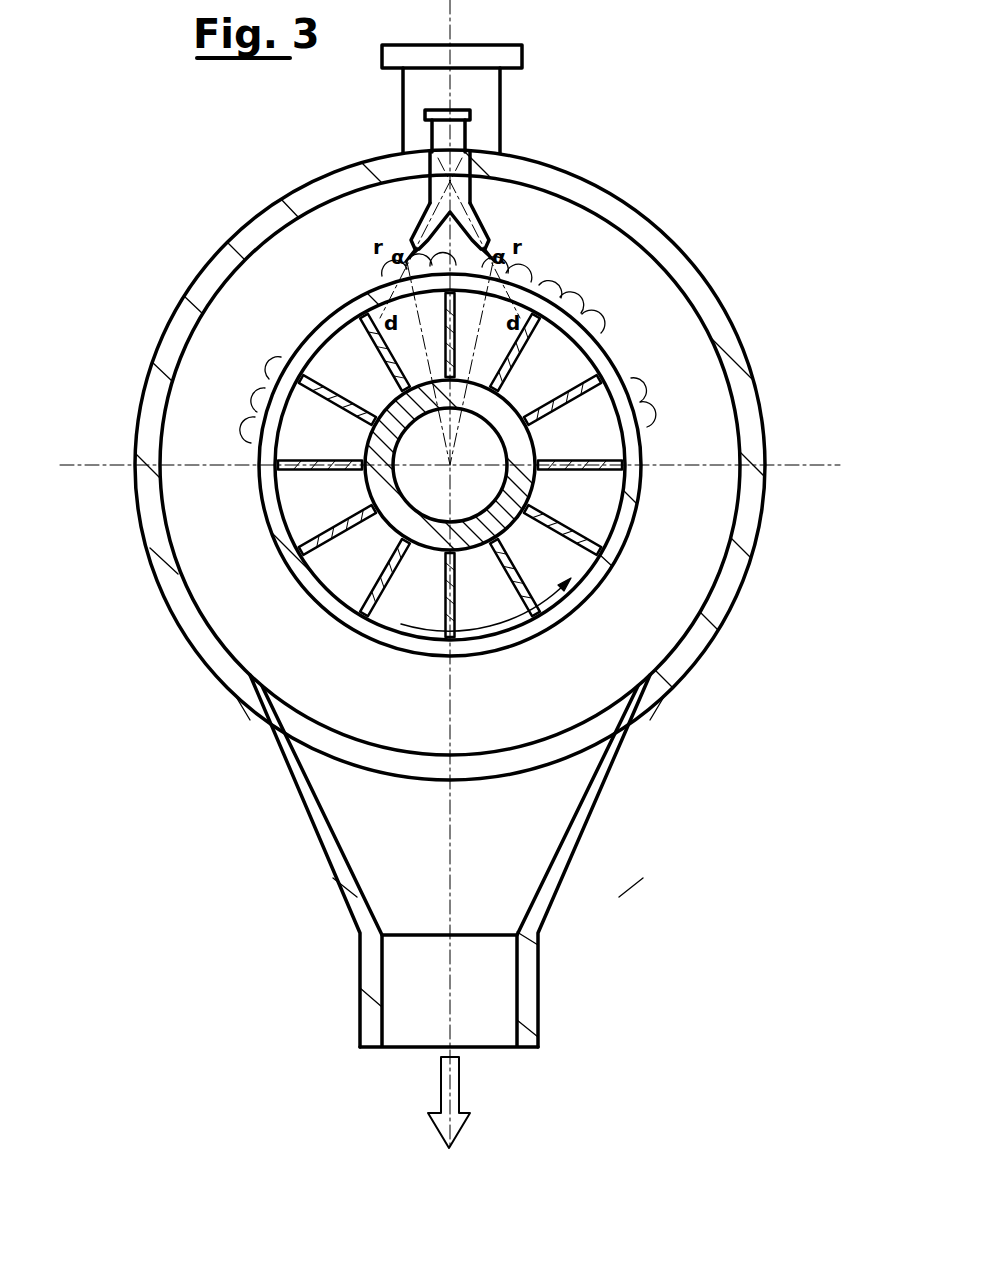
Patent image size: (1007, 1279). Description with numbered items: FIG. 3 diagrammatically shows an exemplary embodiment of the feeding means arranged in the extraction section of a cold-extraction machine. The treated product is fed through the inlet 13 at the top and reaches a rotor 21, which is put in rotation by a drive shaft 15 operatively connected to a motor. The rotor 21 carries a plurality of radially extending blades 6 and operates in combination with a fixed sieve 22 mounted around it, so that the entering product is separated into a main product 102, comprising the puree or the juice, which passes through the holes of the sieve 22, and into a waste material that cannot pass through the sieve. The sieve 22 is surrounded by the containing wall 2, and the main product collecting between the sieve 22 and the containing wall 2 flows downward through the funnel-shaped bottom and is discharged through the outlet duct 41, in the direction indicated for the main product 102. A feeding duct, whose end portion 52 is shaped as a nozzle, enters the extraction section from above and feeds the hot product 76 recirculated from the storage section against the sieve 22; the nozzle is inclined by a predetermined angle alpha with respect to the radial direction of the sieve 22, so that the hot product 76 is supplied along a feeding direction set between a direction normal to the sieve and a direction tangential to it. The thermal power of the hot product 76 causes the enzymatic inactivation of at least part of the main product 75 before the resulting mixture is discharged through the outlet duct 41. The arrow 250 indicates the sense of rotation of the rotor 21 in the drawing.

The containing wall 2 is at (200, 285).
The blades 6 is at (283, 463).
The inlet 13 is at (513, 57).
The drive shaft 15 is at (493, 462).
The rotor 21 is at (520, 495).
The sieve 22 is at (599, 354).
The outlet duct 41 is at (368, 1007).
The end portion 52 is at (420, 212).
The main product 75 is at (378, 272).
The hot product 76 is at (406, 252).
The main product 102 is at (440, 1088).
The rotation direction 250 is at (578, 597).